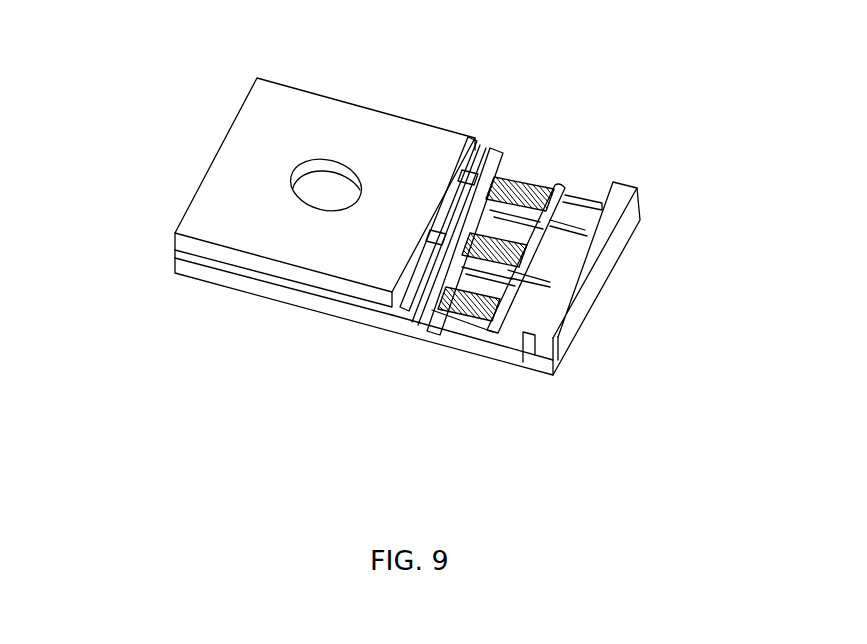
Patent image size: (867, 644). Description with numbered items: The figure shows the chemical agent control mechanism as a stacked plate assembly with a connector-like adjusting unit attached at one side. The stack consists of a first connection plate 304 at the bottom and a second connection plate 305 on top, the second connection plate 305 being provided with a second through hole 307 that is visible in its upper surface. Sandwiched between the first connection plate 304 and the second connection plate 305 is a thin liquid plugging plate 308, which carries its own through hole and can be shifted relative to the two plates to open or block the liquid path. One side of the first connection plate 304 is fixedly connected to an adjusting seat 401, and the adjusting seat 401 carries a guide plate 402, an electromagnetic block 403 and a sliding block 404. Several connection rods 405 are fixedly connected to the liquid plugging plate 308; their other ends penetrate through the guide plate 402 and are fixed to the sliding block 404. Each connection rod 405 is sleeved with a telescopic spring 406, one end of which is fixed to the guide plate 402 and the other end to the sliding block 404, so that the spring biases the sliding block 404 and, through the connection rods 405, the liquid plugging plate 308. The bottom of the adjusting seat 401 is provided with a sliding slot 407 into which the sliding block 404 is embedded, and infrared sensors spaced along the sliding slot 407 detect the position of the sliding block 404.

The first connection plate 304 is at (287, 295).
The second connection plate 305 is at (393, 142).
The second through hole 307 is at (317, 167).
The liquid plugging plate 308 is at (250, 270).
The adjusting seat 401 is at (580, 200).
The guide plate 402 is at (503, 160).
The electromagnetic block 403 is at (640, 203).
The sliding block 404 is at (505, 280).
The connection rod 405 is at (396, 288).
The telescopic spring 406 is at (448, 313).
The sliding slot 407 is at (523, 332).